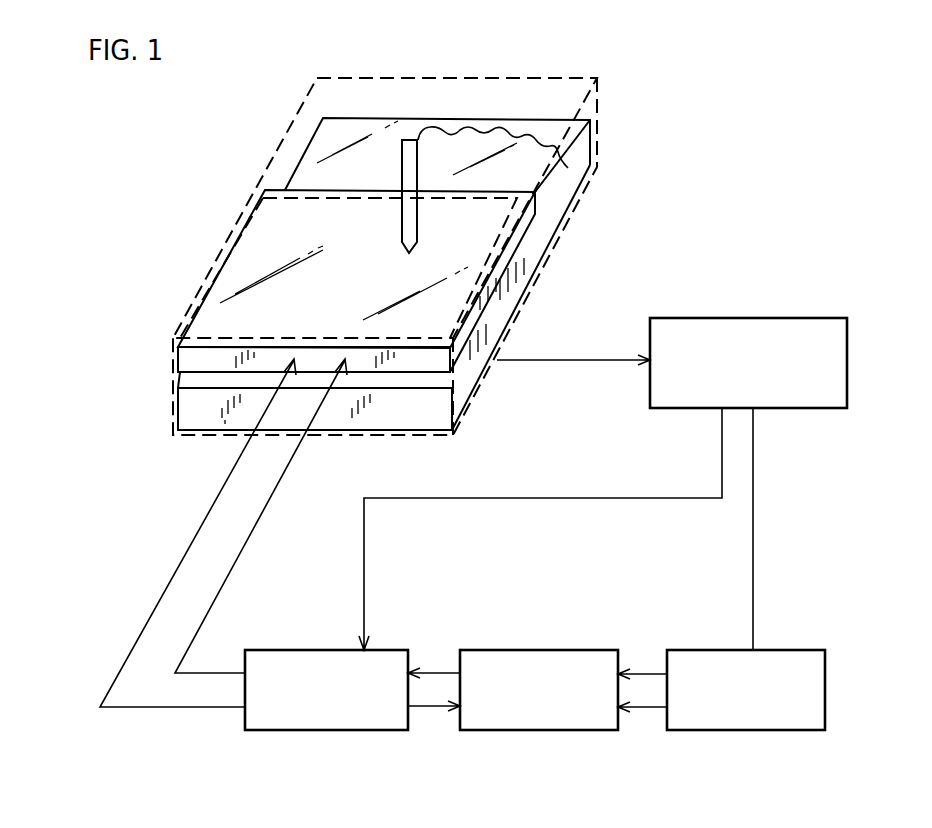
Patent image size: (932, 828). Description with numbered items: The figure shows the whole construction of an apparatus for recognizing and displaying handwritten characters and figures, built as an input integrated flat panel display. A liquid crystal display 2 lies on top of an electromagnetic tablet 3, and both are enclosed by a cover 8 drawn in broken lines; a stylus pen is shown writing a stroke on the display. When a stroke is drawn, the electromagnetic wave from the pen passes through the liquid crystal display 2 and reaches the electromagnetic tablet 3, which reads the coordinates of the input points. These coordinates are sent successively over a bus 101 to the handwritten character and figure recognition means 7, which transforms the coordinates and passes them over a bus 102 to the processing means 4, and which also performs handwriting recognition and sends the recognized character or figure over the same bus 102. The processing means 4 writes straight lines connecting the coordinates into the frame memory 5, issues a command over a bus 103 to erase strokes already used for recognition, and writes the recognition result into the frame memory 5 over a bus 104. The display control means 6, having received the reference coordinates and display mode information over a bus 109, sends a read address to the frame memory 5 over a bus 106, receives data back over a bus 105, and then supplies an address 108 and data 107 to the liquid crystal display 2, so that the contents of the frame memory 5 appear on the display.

The liquid crystal display 2 is at (212, 276).
The electromagnetic tablet 3 is at (176, 400).
The processing means 4 is at (744, 731).
The frame memory 5 is at (538, 731).
The display control means 6 is at (321, 731).
The handwritten character and figure recognition means 7 is at (848, 362).
The cover 8 is at (570, 77).
The bus 101 is at (583, 358).
The bus 102 is at (755, 541).
The bus 103 is at (643, 672).
The bus 104 is at (647, 709).
The bus 105 is at (435, 672).
The bus 106 is at (432, 708).
The data 107 is at (250, 537).
The address 108 is at (197, 533).
The bus 109 is at (563, 496).